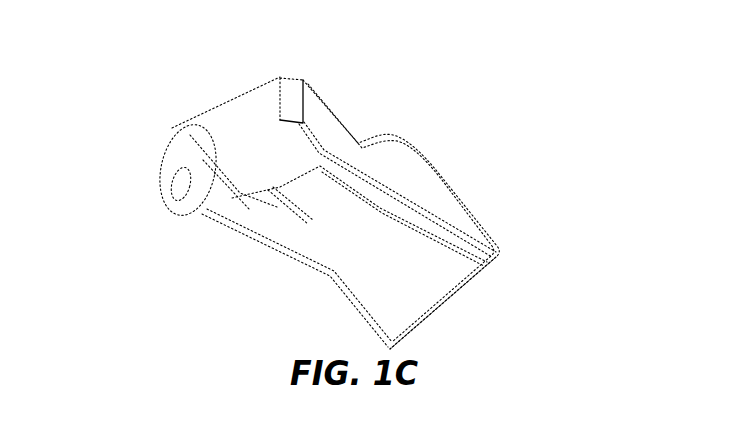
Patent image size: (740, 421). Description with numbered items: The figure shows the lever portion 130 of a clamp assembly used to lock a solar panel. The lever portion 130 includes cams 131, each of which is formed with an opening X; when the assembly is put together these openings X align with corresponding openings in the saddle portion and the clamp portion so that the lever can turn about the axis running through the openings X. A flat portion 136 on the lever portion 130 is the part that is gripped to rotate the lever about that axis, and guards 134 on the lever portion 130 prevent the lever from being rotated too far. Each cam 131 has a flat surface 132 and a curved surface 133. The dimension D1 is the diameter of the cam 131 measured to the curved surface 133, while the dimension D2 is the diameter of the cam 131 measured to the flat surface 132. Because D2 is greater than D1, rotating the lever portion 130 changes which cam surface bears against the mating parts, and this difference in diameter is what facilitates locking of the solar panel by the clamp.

The lever portion 130 is at (418, 115).
The cam 131 is at (303, 140).
The flat surface 132 is at (173, 132).
The curved surface 133 is at (155, 145).
The guard 134 is at (418, 145).
The flat portion 136 is at (424, 289).
The diameter of cam to curved surface D1 is at (288, 127).
The diameter of cam to flat surface D2 is at (307, 95).
The opening X is at (177, 180).